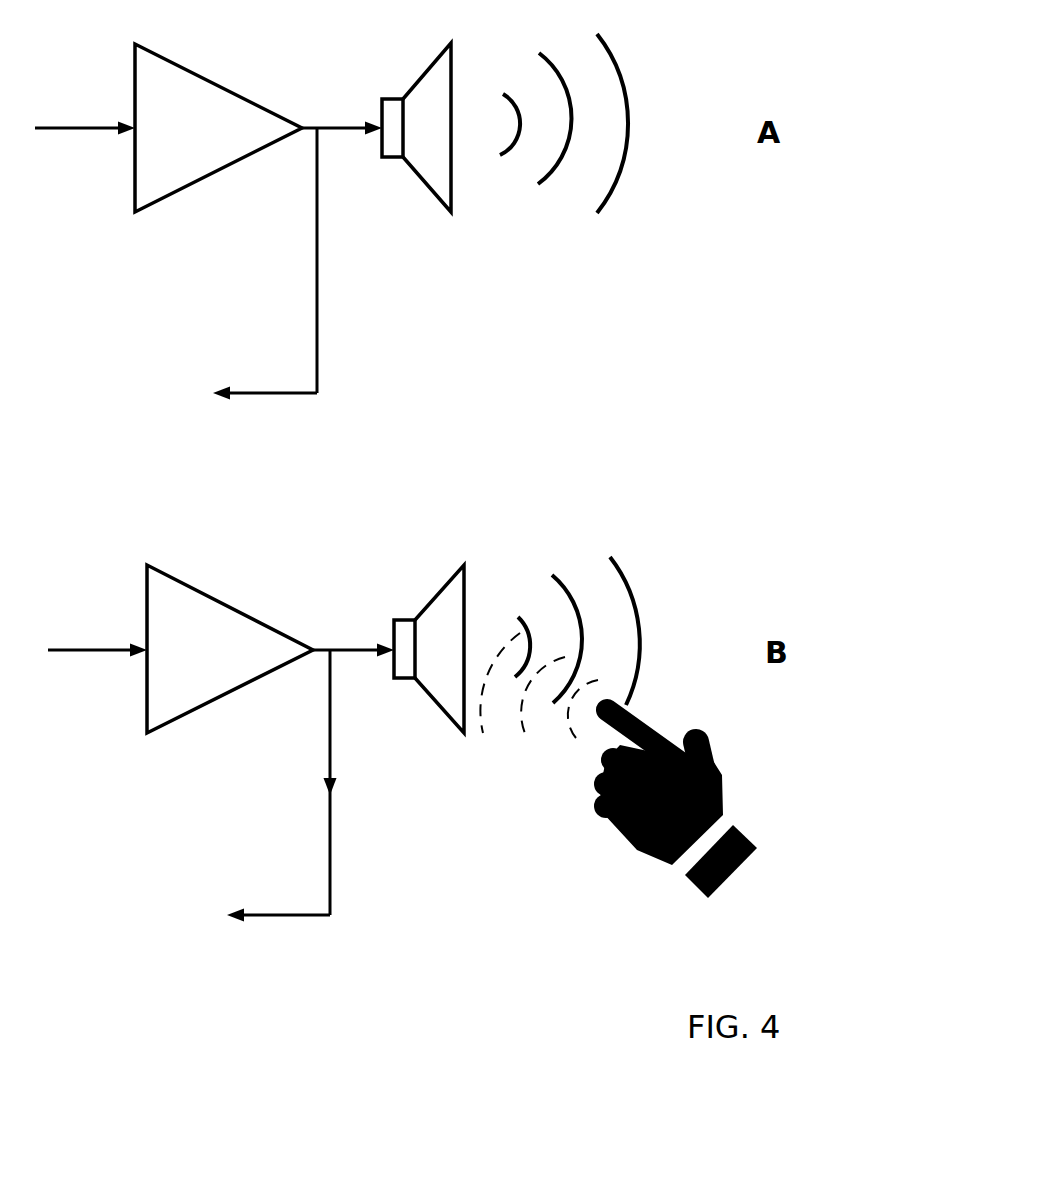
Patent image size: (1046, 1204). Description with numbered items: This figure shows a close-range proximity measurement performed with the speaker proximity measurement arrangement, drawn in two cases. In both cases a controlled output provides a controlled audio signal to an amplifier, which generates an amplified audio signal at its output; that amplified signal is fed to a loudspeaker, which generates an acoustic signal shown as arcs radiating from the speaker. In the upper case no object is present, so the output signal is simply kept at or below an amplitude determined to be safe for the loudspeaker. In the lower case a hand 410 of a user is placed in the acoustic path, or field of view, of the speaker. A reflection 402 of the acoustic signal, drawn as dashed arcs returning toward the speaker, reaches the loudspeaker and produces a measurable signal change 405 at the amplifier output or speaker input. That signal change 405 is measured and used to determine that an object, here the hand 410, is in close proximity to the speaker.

The reflection 402 is at (485, 735).
The signal change 405 is at (335, 787).
The hand 410 is at (657, 860).